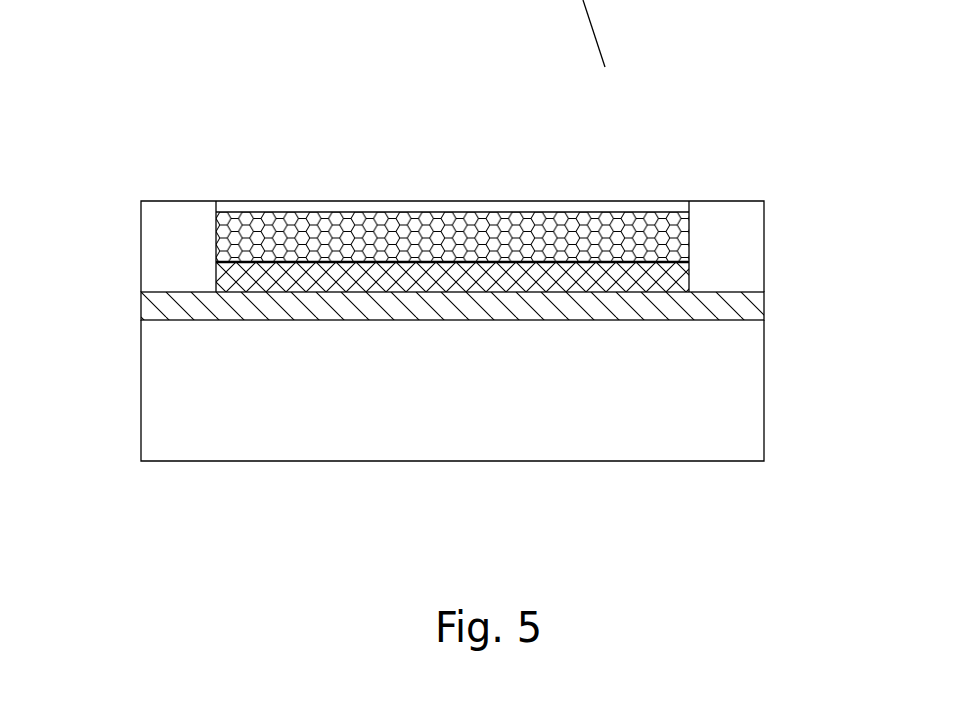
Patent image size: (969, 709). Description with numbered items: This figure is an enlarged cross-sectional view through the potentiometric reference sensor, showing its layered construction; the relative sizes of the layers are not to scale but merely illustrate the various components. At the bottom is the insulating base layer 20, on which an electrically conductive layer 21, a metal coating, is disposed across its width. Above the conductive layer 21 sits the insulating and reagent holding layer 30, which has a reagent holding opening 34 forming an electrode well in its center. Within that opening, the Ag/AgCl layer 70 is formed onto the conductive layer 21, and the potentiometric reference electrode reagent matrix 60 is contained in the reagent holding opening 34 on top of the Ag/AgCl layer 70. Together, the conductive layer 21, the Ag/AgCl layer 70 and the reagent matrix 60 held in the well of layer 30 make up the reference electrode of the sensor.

The insulating base layer 20 is at (375, 460).
The electrically conductive layer 21 is at (343, 305).
The insulating and reagent holding layer 30 is at (140, 227).
The reagent holding opening 34 is at (689, 222).
The potentiometric reference electrode reagent matrix 60 is at (586, 232).
The Ag/AgCl layer 70 is at (668, 275).